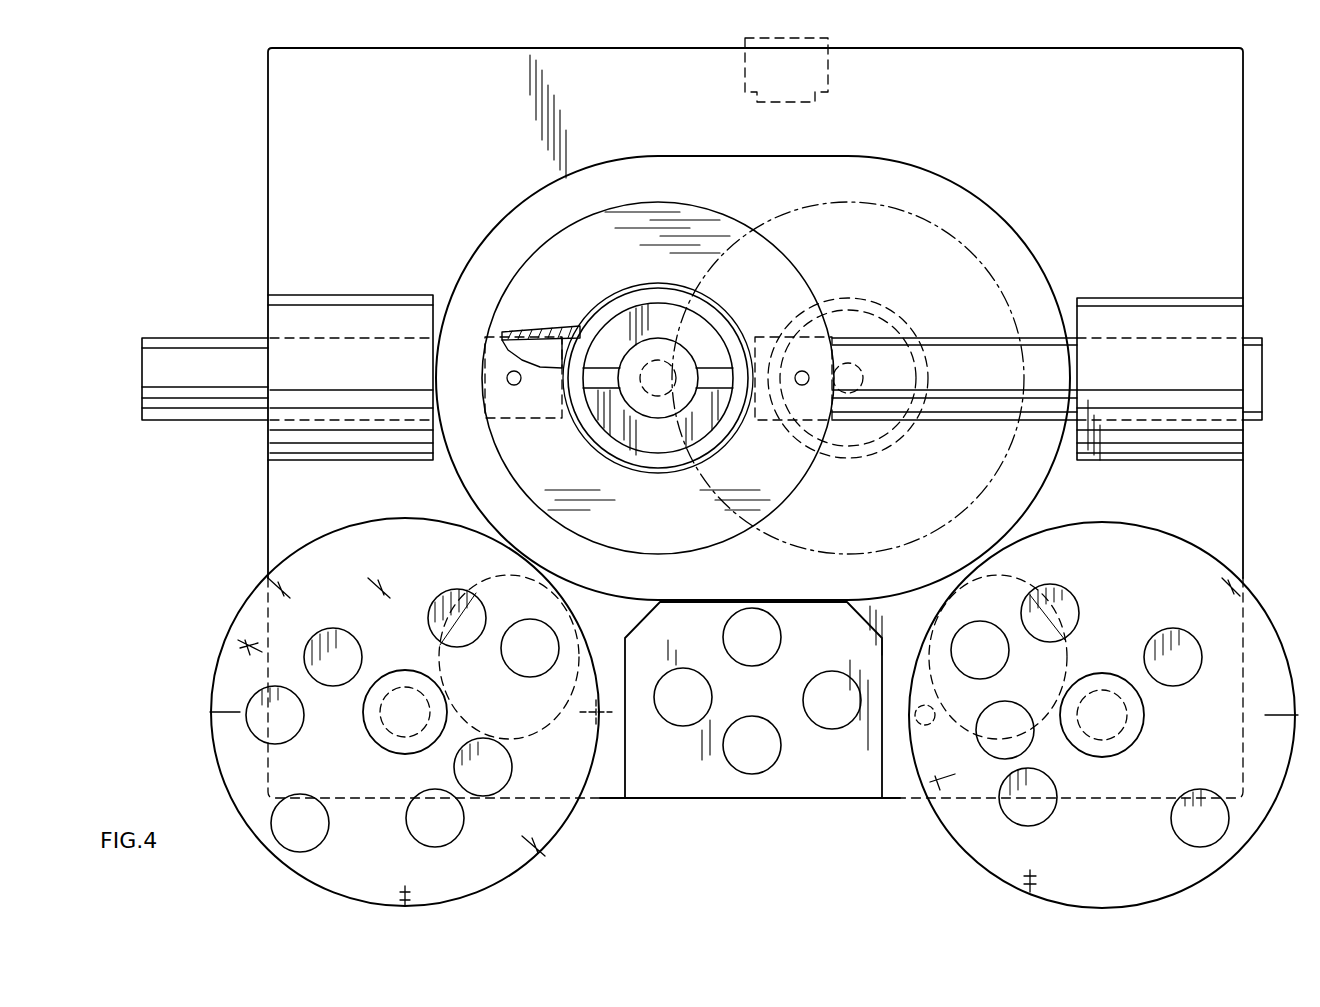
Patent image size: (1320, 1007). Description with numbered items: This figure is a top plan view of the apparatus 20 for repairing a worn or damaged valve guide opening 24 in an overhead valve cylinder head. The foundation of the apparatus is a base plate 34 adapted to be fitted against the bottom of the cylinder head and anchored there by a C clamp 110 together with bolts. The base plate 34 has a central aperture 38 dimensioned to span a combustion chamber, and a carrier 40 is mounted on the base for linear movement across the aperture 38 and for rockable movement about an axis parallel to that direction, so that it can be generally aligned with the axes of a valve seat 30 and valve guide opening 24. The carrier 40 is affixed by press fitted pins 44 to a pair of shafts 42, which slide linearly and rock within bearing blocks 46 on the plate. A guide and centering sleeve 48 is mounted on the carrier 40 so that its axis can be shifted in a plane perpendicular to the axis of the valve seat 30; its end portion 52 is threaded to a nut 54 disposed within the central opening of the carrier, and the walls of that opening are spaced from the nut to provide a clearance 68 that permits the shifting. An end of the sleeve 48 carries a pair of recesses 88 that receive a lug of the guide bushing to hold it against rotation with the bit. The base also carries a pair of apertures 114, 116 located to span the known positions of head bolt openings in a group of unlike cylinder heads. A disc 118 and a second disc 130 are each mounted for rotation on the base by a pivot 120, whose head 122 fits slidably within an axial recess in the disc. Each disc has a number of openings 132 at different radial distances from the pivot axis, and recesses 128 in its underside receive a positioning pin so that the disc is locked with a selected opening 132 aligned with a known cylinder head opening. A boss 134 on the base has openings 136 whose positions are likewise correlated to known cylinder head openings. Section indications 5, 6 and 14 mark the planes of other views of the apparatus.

The apparatus 20 is at (223, 200).
The valve guide opening 24 is at (676, 370).
The valve seat 30 is at (889, 314).
The base plate 34 is at (1140, 164).
The central aperture 38 is at (962, 185).
The carrier 40 is at (706, 212).
The shafts 42 is at (183, 420).
The press fitted pins 44 is at (514, 385).
The bearing blocks 46 is at (316, 295).
The guide and centering sleeve 48 is at (678, 318).
The end portion 52 is at (630, 440).
The nut 54 is at (633, 300).
The clearance 68 is at (592, 318).
The recesses 88 is at (602, 400).
The C clamp 110 is at (828, 88).
The aperture 114 is at (1065, 655).
The aperture 116 is at (540, 730).
The disc 118 is at (1178, 878).
The pivot 120 is at (412, 685).
The head 122 is at (385, 672).
The recesses 128 is at (927, 726).
The second disc 130 is at (333, 876).
The openings 132 is at (328, 690).
The boss 134 is at (848, 800).
The openings 136 is at (803, 703).
The section line 5 is at (905, 715).
The section line 6 is at (492, 378).
The section line 14 is at (752, 822).